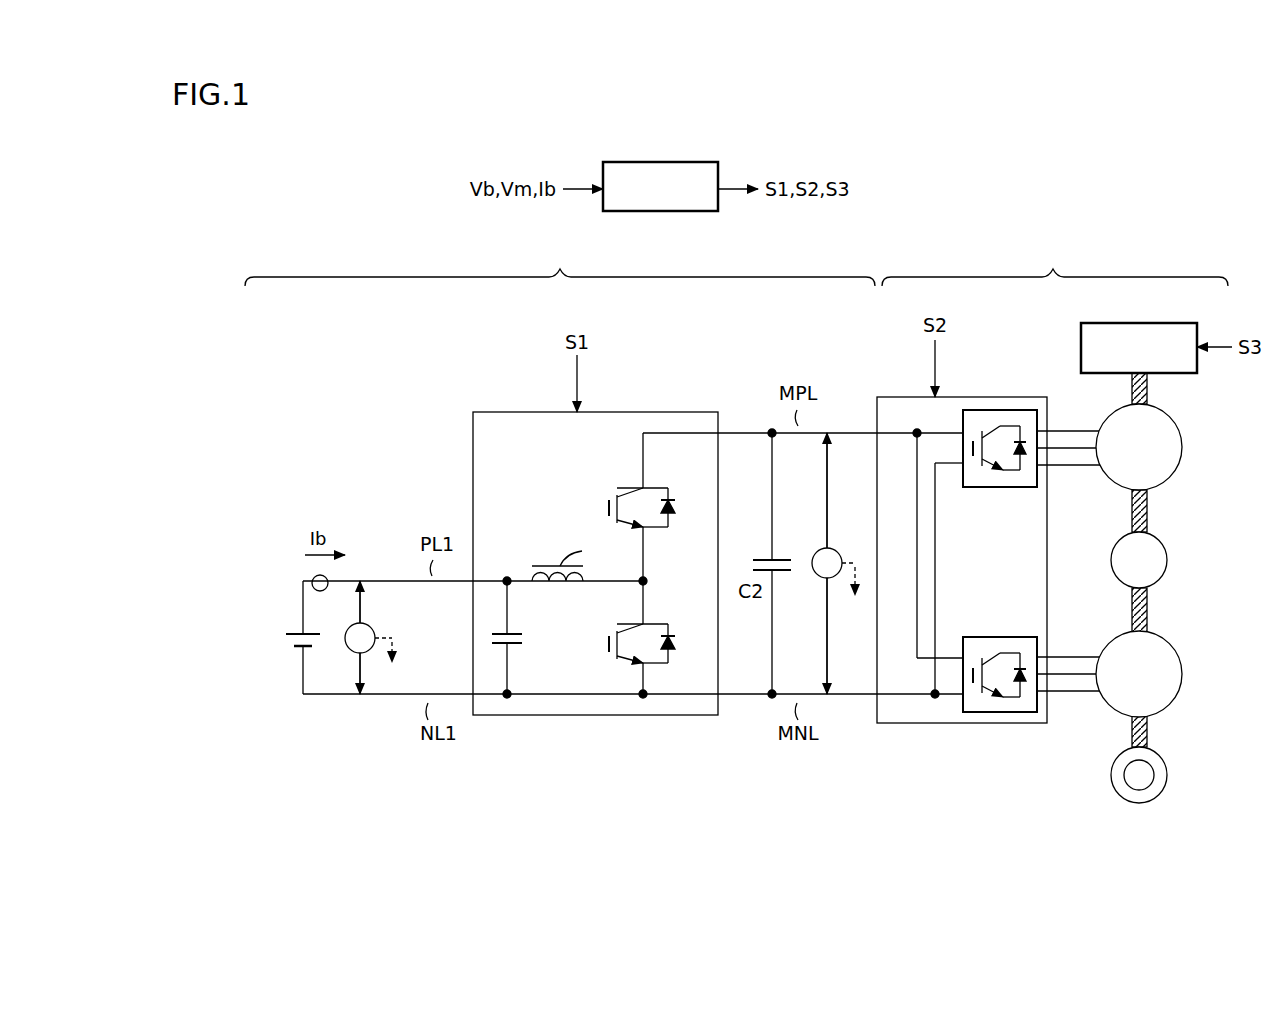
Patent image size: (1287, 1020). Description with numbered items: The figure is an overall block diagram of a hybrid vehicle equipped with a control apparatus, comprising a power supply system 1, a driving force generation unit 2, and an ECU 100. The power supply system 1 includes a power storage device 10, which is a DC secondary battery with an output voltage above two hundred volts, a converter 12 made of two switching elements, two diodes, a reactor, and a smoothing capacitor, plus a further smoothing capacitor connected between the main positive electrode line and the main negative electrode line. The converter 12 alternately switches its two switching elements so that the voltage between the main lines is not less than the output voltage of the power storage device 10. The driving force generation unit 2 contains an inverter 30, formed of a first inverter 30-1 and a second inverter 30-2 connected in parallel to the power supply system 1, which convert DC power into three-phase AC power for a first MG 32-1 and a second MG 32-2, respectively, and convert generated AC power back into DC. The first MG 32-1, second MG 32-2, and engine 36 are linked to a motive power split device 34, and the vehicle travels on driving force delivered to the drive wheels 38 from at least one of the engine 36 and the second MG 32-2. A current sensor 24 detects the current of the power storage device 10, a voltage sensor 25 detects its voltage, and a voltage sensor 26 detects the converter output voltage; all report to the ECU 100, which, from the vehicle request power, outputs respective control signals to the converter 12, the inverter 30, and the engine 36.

The ECU 100 is at (660, 162).
The power supply system 1 is at (560, 265).
The driving force generation unit 2 is at (1055, 265).
The power storage device 10 is at (290, 634).
The current sensor 24 is at (316, 576).
The voltage sensor 25 is at (372, 630).
The converter 12 is at (658, 412).
The voltage sensor 26 is at (836, 554).
The inverter 30 is at (962, 547).
The first inverter 30-1 is at (1000, 487).
The second inverter 30-2 is at (1000, 637).
The first motor-generator 32-1 is at (1160, 410).
The second motor-generator 32-2 is at (1165, 631).
The motive power split device 34 is at (1110, 561).
The engine 36 is at (1081, 339).
The drive wheels 38 is at (1110, 774).